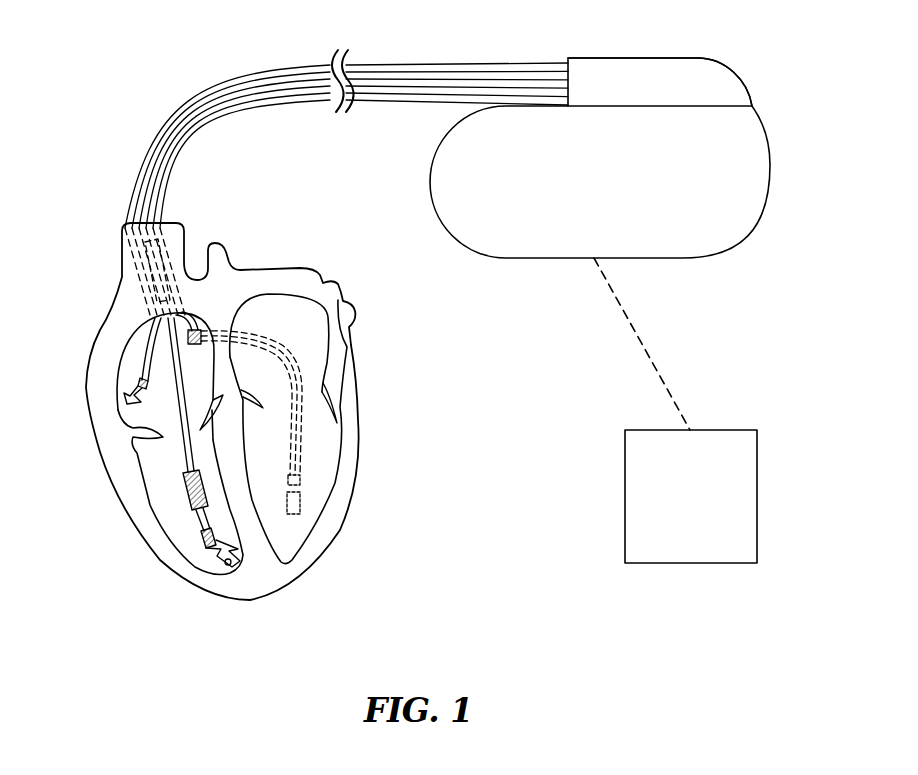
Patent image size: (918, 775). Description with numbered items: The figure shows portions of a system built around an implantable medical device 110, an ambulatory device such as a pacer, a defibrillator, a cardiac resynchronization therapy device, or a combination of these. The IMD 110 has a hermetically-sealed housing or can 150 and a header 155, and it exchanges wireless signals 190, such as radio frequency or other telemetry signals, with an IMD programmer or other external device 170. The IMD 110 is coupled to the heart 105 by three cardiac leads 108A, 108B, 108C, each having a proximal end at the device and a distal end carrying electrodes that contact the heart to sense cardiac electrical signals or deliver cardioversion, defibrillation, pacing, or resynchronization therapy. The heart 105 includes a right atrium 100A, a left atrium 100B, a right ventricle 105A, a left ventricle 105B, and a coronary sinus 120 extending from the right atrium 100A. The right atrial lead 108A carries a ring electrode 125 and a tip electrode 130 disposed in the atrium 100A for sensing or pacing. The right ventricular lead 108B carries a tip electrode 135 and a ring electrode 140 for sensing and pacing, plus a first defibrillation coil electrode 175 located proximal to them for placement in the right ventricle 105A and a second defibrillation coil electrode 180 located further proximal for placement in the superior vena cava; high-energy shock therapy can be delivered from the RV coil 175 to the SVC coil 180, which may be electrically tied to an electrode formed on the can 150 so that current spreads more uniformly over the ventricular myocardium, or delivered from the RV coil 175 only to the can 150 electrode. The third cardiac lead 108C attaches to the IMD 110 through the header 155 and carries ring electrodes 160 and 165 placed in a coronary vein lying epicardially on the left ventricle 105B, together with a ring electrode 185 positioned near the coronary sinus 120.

The right atrium 100A is at (158, 411).
The left atrium 100B is at (288, 312).
The heart 105 is at (360, 396).
The right ventricle 105A is at (160, 460).
The left ventricle 105B is at (297, 537).
The right atrial lead 108A is at (254, 70).
The right ventricular lead 108B is at (207, 102).
The third cardiac lead 108C is at (226, 124).
The implantable medical device 110 is at (660, 44).
The coronary sinus 120 is at (199, 346).
The ring electrode 125 is at (138, 382).
The tip electrode 130 is at (125, 408).
The tip electrode 135 is at (227, 562).
The ring electrode 140 is at (214, 540).
The IMD housing or can 150 is at (771, 160).
The header 155 is at (734, 72).
The ring electrode 160 is at (301, 480).
The ring electrode 165 is at (299, 502).
The external device 170 is at (690, 563).
The first defibrillation coil electrode 175 is at (193, 497).
The second defibrillation coil electrode 180 is at (145, 272).
The ring electrode 185 is at (195, 322).
The wireless signals 190 is at (645, 344).